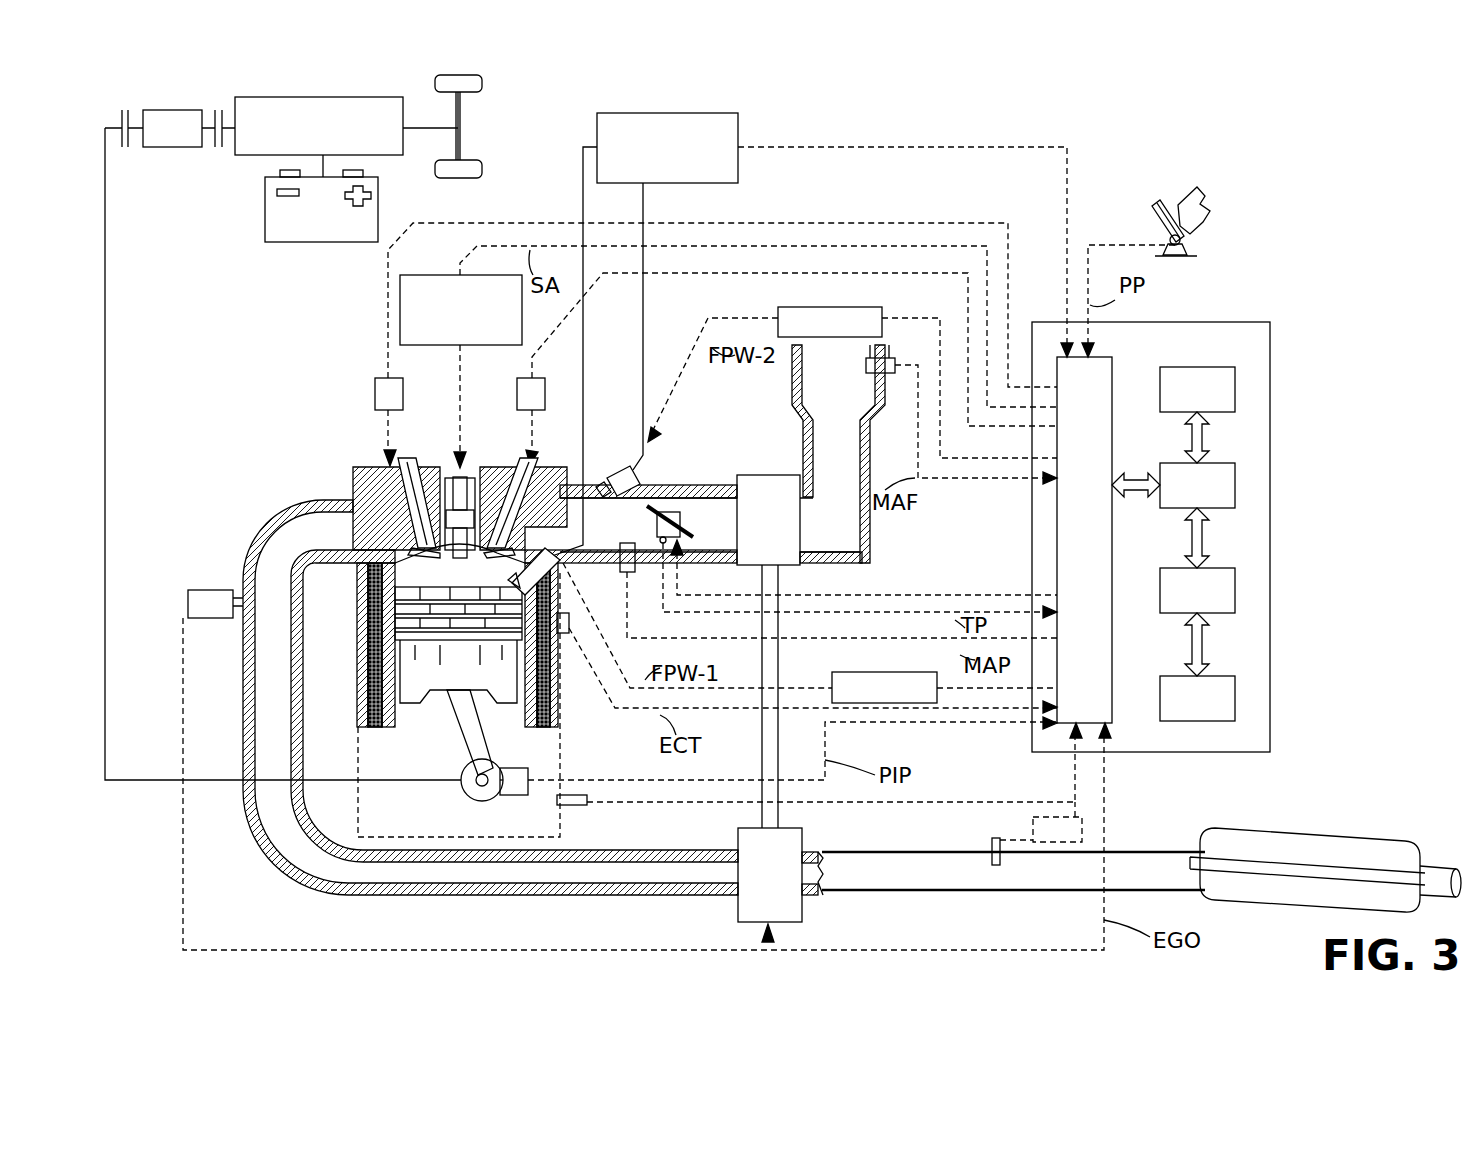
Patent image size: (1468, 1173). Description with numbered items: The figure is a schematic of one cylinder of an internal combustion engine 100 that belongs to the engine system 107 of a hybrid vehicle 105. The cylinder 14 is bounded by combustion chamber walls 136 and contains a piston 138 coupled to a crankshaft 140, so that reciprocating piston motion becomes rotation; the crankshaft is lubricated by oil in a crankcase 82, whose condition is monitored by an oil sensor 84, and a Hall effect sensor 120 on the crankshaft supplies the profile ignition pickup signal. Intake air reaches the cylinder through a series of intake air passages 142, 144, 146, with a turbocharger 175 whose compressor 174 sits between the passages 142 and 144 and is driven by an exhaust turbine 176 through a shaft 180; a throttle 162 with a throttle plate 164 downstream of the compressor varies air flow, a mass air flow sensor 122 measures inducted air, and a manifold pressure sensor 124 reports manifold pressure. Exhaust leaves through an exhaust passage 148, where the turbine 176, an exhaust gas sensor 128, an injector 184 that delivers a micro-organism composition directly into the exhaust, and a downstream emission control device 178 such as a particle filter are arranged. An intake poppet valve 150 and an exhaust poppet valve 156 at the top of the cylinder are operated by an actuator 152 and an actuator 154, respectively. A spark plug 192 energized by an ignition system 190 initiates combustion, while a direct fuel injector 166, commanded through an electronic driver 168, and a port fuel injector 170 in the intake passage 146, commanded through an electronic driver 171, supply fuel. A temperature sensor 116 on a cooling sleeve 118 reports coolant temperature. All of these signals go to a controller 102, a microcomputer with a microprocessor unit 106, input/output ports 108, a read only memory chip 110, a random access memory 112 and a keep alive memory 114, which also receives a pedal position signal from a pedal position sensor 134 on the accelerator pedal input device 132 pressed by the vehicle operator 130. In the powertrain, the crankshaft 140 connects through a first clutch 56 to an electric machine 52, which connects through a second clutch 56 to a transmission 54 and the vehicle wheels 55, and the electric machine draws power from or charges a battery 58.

The cylinder 14 is at (350, 590).
The electric machine 52 is at (172, 147).
The transmission 54 is at (378, 155).
The vehicle wheels 55 is at (462, 178).
The clutch 56 is at (122, 114).
The battery 58 is at (320, 242).
The crankcase 82 is at (560, 835).
The sensor 84 is at (590, 806).
The internal combustion engine 100 is at (290, 423).
The controller 102 is at (1270, 330).
The vehicle 105 is at (1366, 138).
The microprocessor unit 106 is at (1235, 478).
The engine system 107 is at (1335, 738).
The input/output ports 108 is at (705, 113).
The read only memory chip 110 is at (1235, 390).
The random access memory 112 is at (1235, 588).
The keep alive memory 114 is at (1235, 696).
The temperature sensor 116 is at (575, 648).
The cooling sleeve 118 is at (552, 695).
The Hall effect sensor 120 is at (520, 795).
The mass air flow sensor 122 is at (892, 357).
The manifold pressure sensor 124 is at (628, 580).
The exhaust gas sensor 128 is at (188, 594).
The vehicle operator 130 is at (1208, 205).
The input device 132 is at (1152, 215).
The pedal position sensor 134 is at (1185, 242).
The combustion chamber walls 136 is at (395, 720).
The piston 138 is at (442, 690).
The crankshaft 140 is at (476, 800).
The intake air passage 142 is at (838, 454).
The intake air passage 144 is at (776, 525).
The intake air passage 146 is at (648, 525).
The exhaust passage 148 is at (490, 697).
The intake poppet valve 150 is at (498, 540).
The actuator 152 is at (517, 392).
The actuator 154 is at (375, 385).
The exhaust poppet valve 156 is at (395, 520).
The throttle 162 is at (680, 512).
The throttle plate 164 is at (648, 505).
The fuel injector 166 is at (528, 560).
The electronic driver 168 is at (832, 676).
The fuel injector 170 is at (633, 475).
The electronic driver 171 is at (785, 307).
The compressor 174 is at (768, 520).
The turbocharger 175 is at (768, 945).
The exhaust turbine 176 is at (770, 875).
The emission control device 178 is at (1380, 840).
The shaft 180 is at (778, 812).
The injector 184 is at (992, 845).
The ignition system 190 is at (445, 275).
The spark plug 192 is at (460, 472).